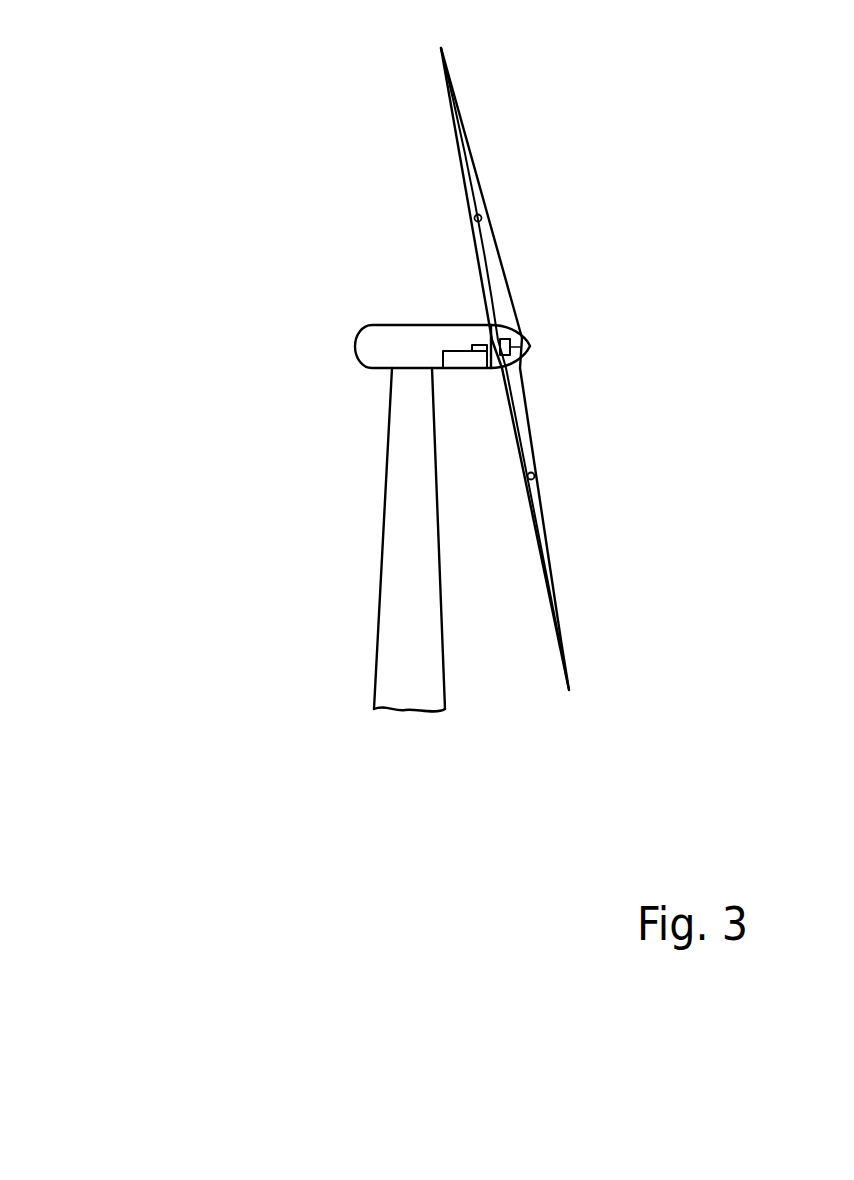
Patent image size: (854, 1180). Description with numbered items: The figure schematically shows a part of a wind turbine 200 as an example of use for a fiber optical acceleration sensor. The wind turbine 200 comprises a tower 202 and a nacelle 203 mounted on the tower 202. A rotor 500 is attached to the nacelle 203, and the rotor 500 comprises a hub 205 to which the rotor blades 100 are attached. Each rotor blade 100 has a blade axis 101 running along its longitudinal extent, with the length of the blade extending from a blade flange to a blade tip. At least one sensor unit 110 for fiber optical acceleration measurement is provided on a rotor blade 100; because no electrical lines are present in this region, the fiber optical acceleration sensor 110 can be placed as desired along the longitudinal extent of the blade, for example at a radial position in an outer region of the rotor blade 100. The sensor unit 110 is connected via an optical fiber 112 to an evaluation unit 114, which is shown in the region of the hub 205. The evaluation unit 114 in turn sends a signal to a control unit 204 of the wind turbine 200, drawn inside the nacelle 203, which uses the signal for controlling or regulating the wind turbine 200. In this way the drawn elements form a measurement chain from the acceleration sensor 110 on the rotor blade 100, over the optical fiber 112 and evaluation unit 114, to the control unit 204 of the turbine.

The wind turbine 200 is at (158, 176).
The rotor 500 is at (475, 96).
The rotor blade 100 is at (470, 157).
The blade axis 101 is at (566, 656).
The sensor unit 110 is at (482, 218).
The optical fiber 112 is at (494, 283).
The evaluation unit 114 is at (530, 348).
The tower 202 is at (396, 568).
The nacelle 203 is at (372, 344).
The control unit 204 is at (464, 358).
The hub 205 is at (530, 345).